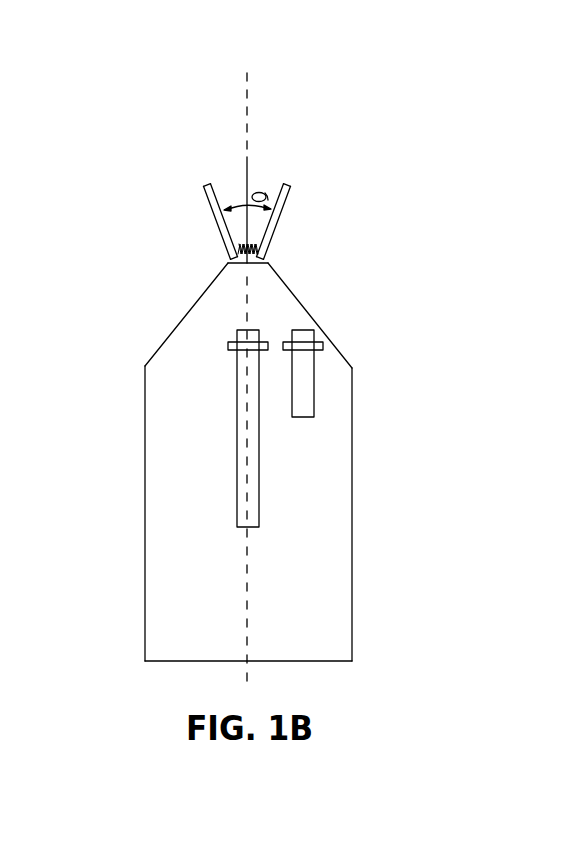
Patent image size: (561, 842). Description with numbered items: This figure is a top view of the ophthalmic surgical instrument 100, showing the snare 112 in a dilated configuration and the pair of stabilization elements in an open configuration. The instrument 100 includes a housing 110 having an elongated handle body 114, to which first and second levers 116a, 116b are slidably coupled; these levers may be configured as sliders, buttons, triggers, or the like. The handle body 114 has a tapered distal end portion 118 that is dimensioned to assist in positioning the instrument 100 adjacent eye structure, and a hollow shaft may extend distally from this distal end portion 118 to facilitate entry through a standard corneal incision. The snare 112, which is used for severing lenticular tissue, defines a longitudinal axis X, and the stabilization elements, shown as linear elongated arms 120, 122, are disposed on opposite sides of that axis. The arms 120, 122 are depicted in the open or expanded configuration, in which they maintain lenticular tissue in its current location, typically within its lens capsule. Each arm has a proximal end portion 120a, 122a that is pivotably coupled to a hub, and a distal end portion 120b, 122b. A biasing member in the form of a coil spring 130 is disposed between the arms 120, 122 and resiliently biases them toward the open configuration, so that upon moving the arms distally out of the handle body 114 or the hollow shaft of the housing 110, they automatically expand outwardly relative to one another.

The ophthalmic surgical instrument 100 is at (127, 255).
The housing 110 is at (286, 513).
The snare 112 is at (257, 168).
The handle body 114 is at (330, 543).
The first lever 116a is at (228, 346).
The second lever 116b is at (323, 347).
The tapered distal end portion 118 is at (210, 308).
The arm 120 is at (187, 198).
The proximal end portion 120a is at (234, 249).
The distal end portion 120b is at (217, 196).
The arm 122 is at (310, 234).
The proximal end portion 122a is at (263, 256).
The distal end portion 122b is at (291, 189).
The coil spring 130 is at (261, 233).